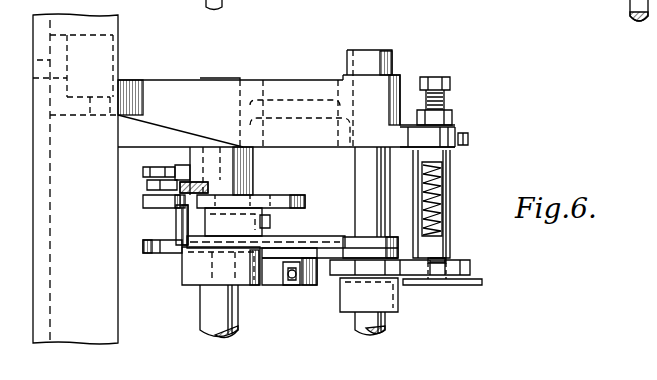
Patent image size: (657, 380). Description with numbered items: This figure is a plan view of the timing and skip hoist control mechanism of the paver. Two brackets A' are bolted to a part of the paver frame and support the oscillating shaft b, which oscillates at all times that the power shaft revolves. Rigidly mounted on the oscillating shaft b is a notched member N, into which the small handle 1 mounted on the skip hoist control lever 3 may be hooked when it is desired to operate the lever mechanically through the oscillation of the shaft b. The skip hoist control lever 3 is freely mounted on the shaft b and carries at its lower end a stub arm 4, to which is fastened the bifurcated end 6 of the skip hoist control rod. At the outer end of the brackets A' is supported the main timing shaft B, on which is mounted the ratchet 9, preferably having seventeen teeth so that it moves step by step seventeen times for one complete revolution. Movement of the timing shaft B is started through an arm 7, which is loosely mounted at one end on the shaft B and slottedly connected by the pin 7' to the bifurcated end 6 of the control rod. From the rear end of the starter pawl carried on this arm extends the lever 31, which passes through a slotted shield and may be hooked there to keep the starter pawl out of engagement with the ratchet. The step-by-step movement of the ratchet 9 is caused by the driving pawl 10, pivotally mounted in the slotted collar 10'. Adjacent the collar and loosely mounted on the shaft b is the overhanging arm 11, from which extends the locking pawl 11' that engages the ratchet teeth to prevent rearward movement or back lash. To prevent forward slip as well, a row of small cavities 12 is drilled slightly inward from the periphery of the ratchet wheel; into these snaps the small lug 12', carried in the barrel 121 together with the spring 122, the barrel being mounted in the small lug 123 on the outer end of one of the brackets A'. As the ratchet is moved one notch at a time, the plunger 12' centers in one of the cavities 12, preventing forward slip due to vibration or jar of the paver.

The bracket A' is at (286, 98).
The main timing shaft B is at (376, 56).
The small lug 123 is at (458, 128).
The spring 122 is at (436, 181).
The barrel 121 is at (450, 220).
The small lug 12' is at (459, 247).
The small cavities 12 is at (429, 289).
The ratchet 9 is at (472, 268).
The lever 31 is at (462, 286).
The overhanging arm 11 is at (292, 237).
The locking pawl 11' is at (358, 303).
The driving pawl 10 is at (283, 286).
The slotted collar 10' is at (211, 280).
The oscillating shaft b is at (217, 322).
The small handle 1 is at (284, 195).
The notched member N is at (185, 210).
The bifurcated end 6 is at (150, 168).
The skip hoist control lever 3 is at (182, 173).
The stub arm 4 is at (152, 187).
The pin 7' is at (171, 226).
The arm 7 is at (156, 257).